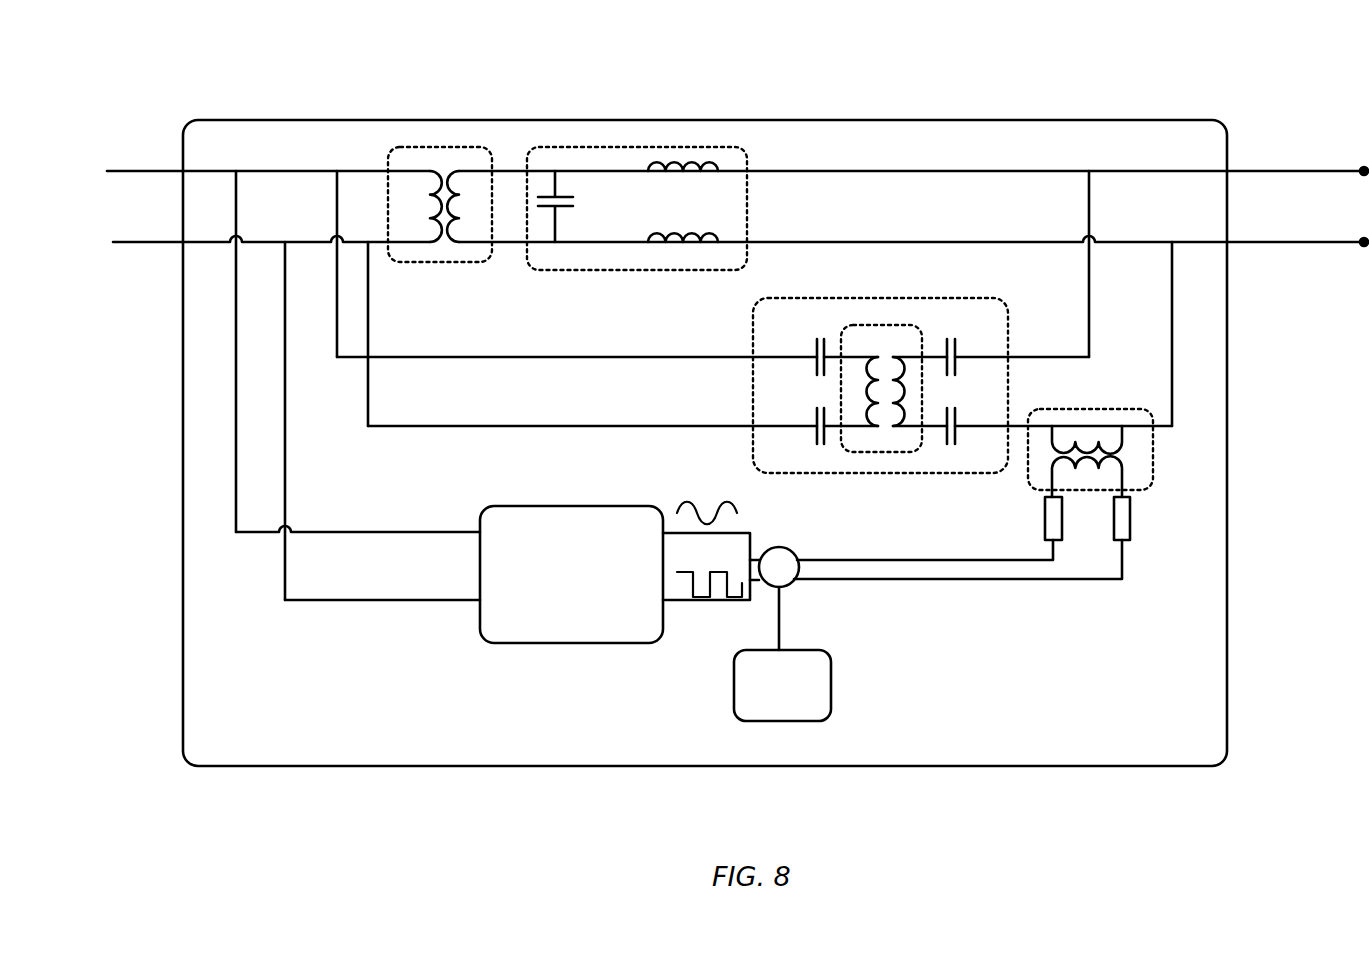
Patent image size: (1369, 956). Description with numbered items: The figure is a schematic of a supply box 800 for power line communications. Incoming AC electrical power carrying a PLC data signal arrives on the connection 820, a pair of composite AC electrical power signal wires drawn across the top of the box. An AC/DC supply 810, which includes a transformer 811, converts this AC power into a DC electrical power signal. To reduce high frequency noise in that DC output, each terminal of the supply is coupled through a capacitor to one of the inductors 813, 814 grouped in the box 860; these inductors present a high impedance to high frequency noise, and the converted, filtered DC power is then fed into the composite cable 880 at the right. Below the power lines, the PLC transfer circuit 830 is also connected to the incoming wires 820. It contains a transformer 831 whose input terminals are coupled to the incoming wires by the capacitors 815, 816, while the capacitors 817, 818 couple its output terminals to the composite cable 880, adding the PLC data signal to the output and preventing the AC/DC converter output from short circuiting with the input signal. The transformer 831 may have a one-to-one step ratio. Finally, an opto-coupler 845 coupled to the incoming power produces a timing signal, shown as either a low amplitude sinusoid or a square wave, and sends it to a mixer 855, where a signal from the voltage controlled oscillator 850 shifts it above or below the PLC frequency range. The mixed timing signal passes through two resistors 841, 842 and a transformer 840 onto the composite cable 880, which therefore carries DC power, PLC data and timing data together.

The supply box 800 is at (183, 130).
The connection 820 is at (167, 171).
The AC/DC supply 810 is at (417, 216).
The transformer 811 is at (443, 236).
The box 860 is at (606, 194).
The inductor 813 is at (649, 171).
The inductor 814 is at (665, 243).
The PLC transfer circuit 830 is at (754, 370).
The transformer 831 is at (842, 330).
The capacitor 815 is at (812, 357).
The capacitor 816 is at (812, 426).
The capacitor 817 is at (962, 354).
The capacitor 818 is at (962, 422).
The transformer 840 is at (1007, 494).
The resistor 841 is at (1045, 527).
The resistor 842 is at (1130, 527).
The opto-coupler 845 is at (497, 572).
The voltage controlled oscillator 850 is at (782, 685).
The mixer 855 is at (793, 553).
The composite cable 880 is at (1331, 242).